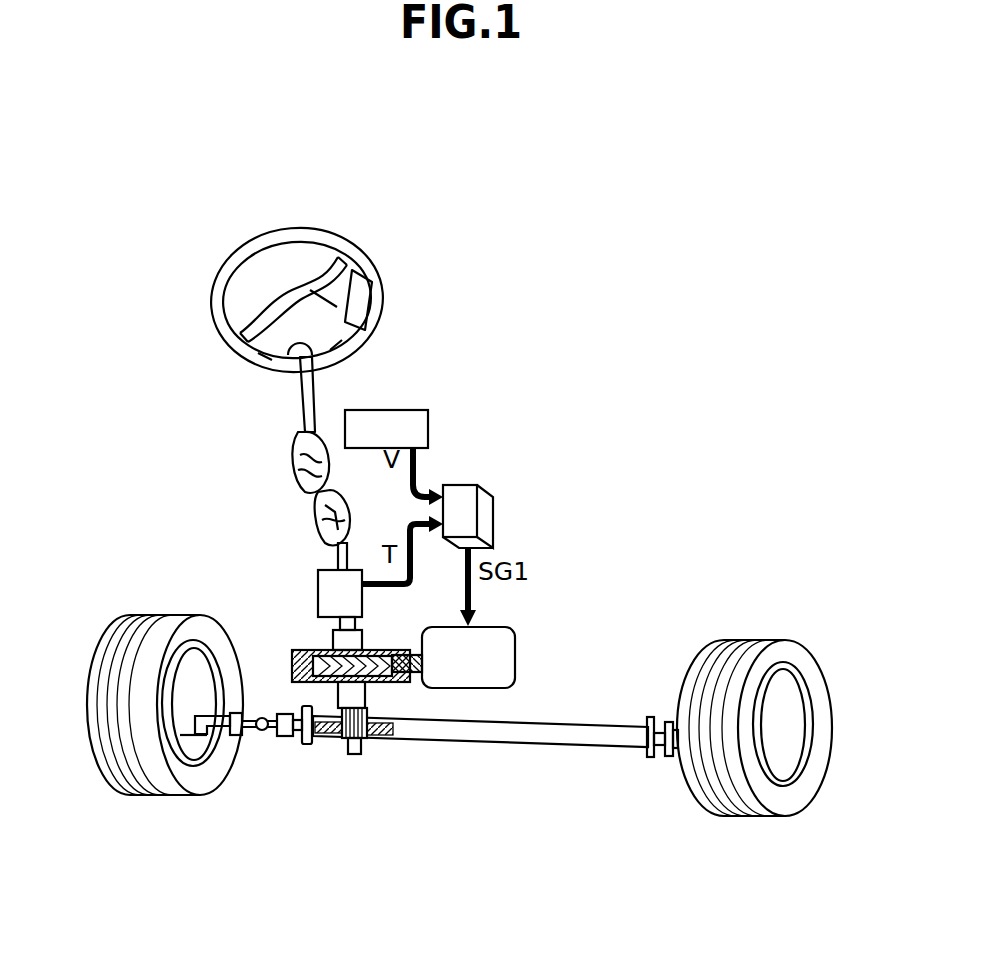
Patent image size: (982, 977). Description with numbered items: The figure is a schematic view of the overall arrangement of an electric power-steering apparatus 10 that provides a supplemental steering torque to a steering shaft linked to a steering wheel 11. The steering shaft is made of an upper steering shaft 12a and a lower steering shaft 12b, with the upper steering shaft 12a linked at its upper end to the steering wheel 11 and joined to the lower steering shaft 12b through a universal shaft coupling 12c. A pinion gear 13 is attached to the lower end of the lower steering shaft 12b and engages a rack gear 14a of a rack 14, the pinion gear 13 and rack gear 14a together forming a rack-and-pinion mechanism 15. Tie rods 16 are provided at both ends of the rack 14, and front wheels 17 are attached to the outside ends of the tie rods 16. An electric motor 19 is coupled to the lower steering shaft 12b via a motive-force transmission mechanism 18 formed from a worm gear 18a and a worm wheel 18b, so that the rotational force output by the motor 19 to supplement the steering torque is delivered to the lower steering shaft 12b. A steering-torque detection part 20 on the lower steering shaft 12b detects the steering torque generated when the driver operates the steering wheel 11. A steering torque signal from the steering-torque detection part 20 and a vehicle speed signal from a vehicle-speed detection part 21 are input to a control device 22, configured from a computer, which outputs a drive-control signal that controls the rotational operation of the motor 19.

The electric power-steering apparatus 10 is at (341, 182).
The steering wheel 11 is at (372, 268).
The upper steering shaft 12a is at (313, 398).
The lower steering shaft 12b is at (320, 553).
The universal shaft coupling 12c is at (278, 455).
The pinion gear 13 is at (346, 742).
The rack 14 is at (480, 761).
The rack gear 14a is at (385, 738).
The rack-and-pinion mechanism 15 is at (347, 756).
The tie rods 16 is at (250, 736).
The front wheels 17 is at (142, 627).
The motive-force transmission mechanism 18 is at (398, 652).
The worm gear 18a is at (395, 678).
The worm wheel 18b is at (292, 650).
The electric motor 19 is at (512, 628).
The steering-torque detection part 20 is at (318, 582).
The vehicle-speed detection part 21 is at (422, 410).
The control device 22 is at (462, 485).